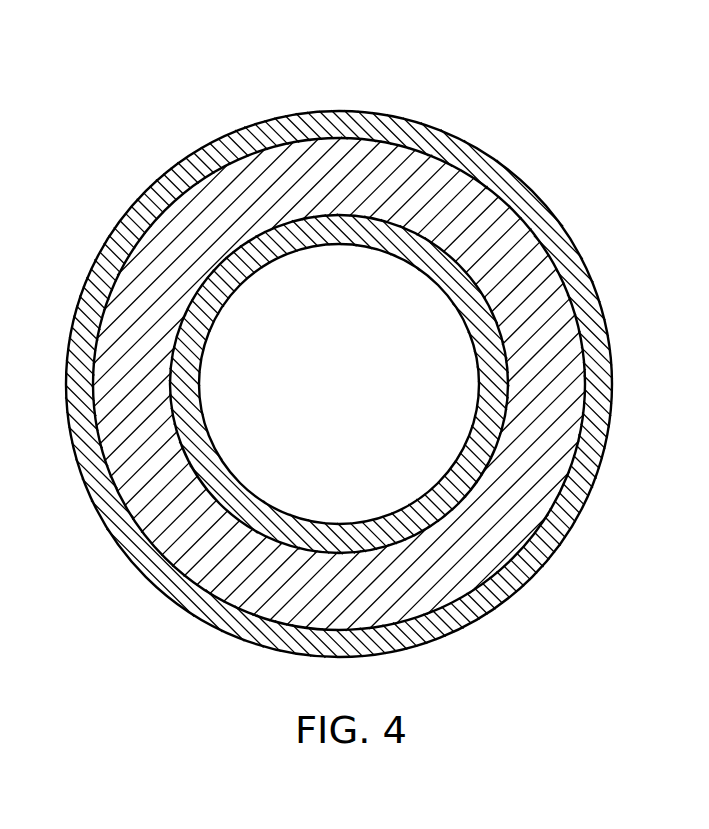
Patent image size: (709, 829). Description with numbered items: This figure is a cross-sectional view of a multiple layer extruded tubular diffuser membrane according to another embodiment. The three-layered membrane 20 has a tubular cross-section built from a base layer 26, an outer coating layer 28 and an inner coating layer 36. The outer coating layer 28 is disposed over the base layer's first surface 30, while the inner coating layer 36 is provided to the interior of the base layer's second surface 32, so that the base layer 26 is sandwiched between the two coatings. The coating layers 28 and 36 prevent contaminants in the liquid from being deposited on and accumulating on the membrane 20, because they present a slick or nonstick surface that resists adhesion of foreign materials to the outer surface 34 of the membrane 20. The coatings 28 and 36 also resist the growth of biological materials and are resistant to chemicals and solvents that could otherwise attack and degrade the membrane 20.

The three-layered membrane 20 is at (354, 383).
The base layer 26 is at (550, 390).
The outer coating layer 28 is at (354, 383).
The first surface 30 is at (395, 143).
The second surface 32 is at (503, 380).
The outer surface 34 is at (333, 112).
The inner coating layer 36 is at (483, 428).